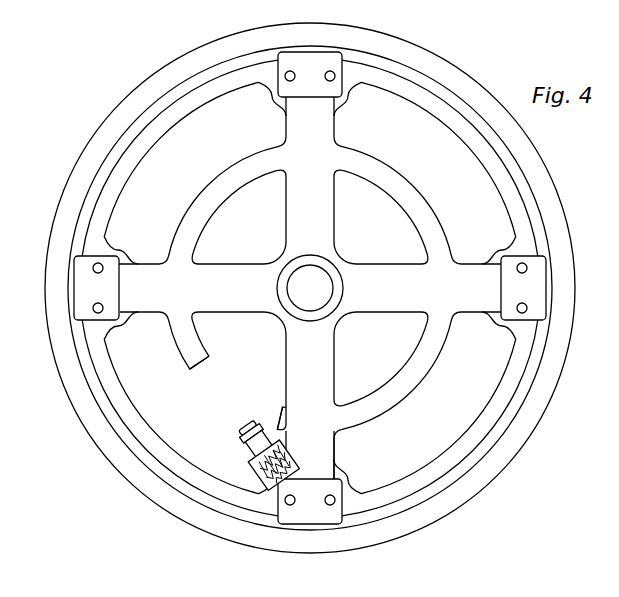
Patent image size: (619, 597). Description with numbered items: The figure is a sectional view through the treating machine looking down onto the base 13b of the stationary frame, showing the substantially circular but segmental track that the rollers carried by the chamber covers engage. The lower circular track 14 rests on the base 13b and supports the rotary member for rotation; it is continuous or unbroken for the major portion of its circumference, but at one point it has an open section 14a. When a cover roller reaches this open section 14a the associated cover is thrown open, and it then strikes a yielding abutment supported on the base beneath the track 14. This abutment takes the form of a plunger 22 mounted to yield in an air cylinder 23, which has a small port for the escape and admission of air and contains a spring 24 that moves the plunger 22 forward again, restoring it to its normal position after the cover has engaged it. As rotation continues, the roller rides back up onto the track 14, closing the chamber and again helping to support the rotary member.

The base 13b is at (98, 385).
The lower circular track 14 is at (410, 198).
The open section 14a is at (208, 368).
The plunger 22 is at (263, 427).
The air cylinder 23 is at (255, 468).
The spring 24 is at (263, 480).